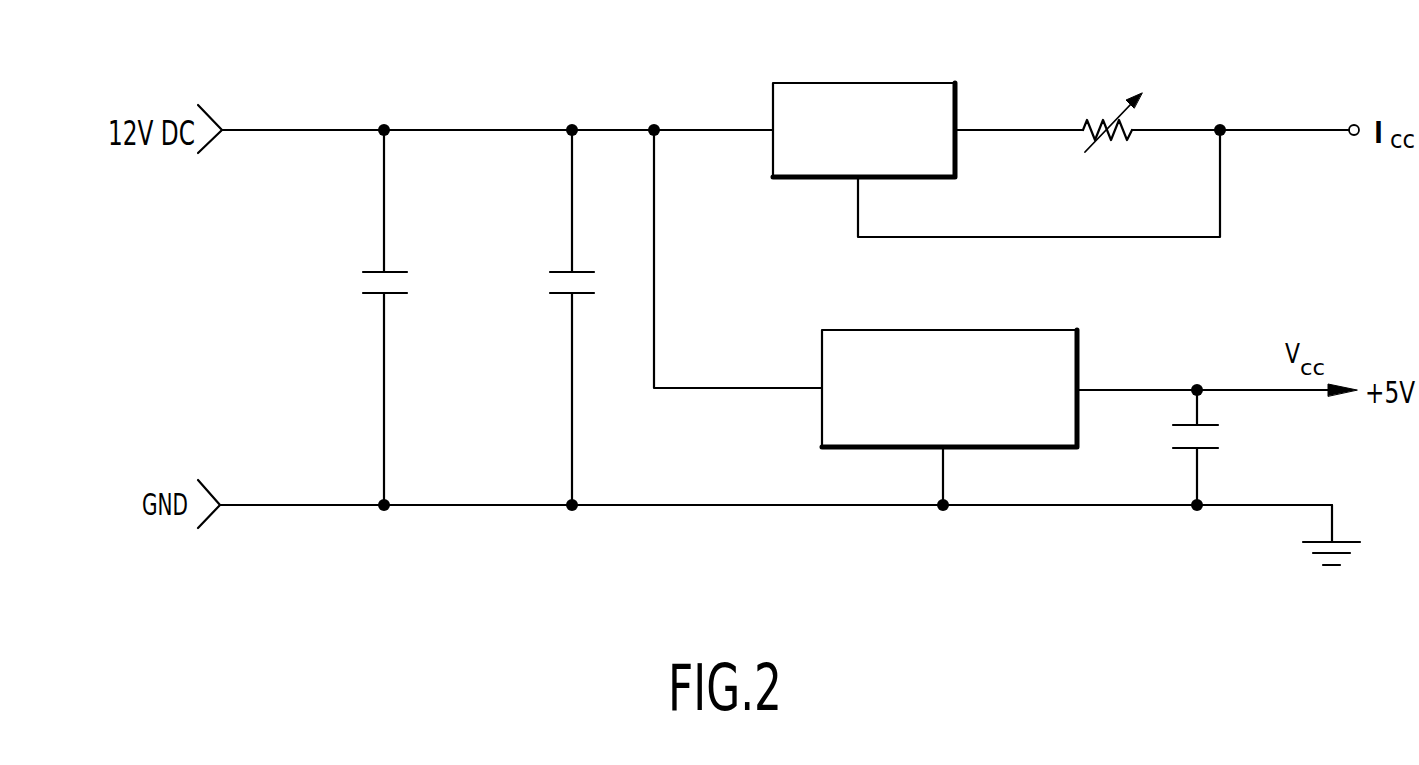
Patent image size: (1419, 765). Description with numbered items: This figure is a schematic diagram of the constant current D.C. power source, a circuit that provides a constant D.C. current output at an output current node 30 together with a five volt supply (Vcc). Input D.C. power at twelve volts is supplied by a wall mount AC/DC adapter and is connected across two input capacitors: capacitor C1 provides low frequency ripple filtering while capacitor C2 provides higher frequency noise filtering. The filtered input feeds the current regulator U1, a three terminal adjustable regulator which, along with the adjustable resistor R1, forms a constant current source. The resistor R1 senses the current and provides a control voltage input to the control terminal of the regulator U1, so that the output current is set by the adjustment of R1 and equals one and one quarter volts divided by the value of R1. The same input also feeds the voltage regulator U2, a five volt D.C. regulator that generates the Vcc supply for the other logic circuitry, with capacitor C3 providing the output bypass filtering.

The output current node 30 is at (1355, 125).
The capacitor C1 is at (363, 317).
The capacitor C2 is at (553, 317).
The capacitor C3 is at (1221, 447).
The current regulator U1 is at (865, 125).
The voltage regulator U2 is at (945, 384).
The adjustable resistor R1 is at (1112, 107).